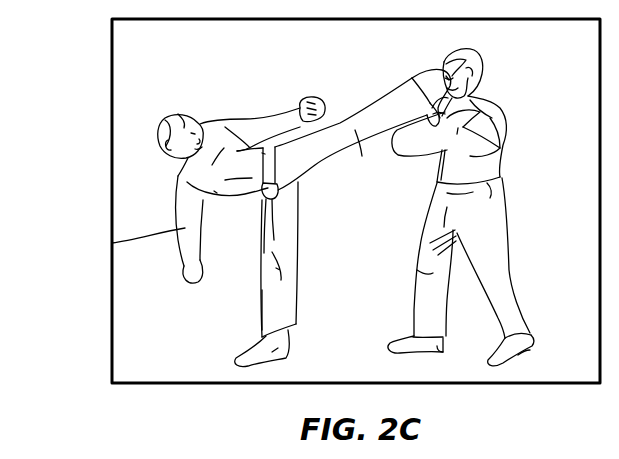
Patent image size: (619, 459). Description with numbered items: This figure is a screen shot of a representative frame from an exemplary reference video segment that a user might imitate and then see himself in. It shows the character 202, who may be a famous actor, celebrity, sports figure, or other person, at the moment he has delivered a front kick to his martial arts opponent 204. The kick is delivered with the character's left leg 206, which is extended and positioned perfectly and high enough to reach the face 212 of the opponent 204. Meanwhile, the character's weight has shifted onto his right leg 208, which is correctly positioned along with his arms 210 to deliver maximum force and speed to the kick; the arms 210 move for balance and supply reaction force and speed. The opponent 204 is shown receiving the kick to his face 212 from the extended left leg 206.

The character 202 is at (226, 96).
The opponent 204 is at (506, 72).
The left leg 206 is at (345, 152).
The right leg 208 is at (262, 299).
The arms 210 is at (112, 242).
The face 212 is at (442, 73).